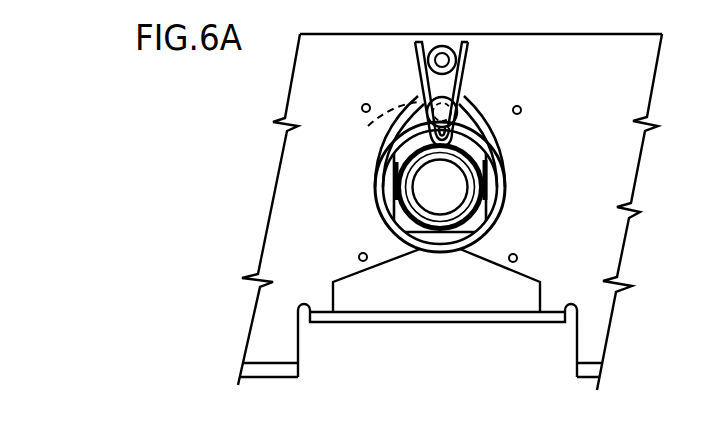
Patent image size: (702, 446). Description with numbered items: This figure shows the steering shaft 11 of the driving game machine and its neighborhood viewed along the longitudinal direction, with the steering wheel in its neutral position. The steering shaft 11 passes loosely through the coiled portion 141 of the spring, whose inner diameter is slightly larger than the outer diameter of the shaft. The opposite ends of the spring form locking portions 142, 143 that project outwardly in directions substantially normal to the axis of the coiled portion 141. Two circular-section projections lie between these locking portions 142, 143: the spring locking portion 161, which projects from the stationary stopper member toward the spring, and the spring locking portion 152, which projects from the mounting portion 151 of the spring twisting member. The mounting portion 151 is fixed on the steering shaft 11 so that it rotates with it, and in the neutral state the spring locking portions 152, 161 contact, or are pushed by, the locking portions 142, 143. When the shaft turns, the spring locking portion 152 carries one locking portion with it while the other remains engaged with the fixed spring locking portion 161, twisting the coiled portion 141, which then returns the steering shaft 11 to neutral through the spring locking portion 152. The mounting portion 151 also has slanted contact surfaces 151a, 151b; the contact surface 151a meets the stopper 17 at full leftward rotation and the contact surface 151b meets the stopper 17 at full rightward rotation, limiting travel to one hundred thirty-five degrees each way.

The steering shaft 11 is at (462, 184).
The stopper 17 is at (512, 283).
The coiled portion 141 is at (377, 217).
The locking portion 142 is at (424, 80).
The locking portion 143 is at (471, 45).
The mounting portion 151 is at (486, 150).
The contact surface 151a is at (372, 148).
The contact surface 151b is at (482, 120).
The spring locking portion 152 is at (370, 124).
The spring locking portion 161 is at (450, 65).